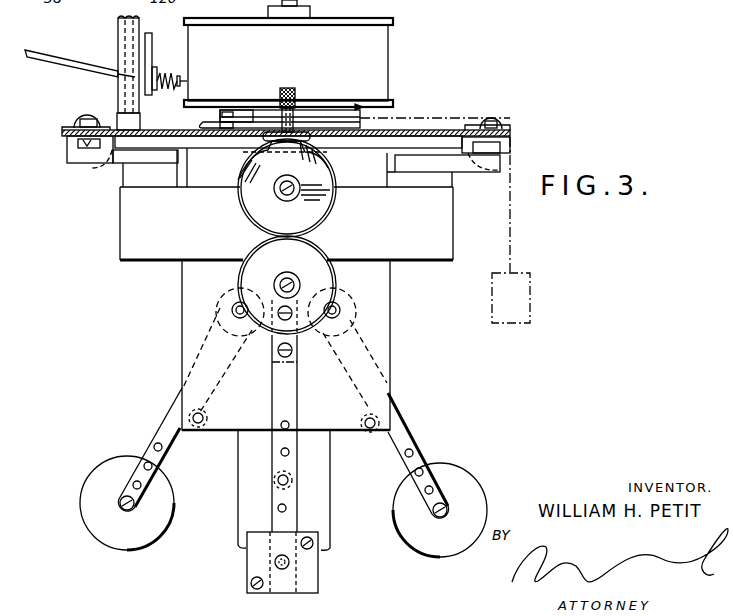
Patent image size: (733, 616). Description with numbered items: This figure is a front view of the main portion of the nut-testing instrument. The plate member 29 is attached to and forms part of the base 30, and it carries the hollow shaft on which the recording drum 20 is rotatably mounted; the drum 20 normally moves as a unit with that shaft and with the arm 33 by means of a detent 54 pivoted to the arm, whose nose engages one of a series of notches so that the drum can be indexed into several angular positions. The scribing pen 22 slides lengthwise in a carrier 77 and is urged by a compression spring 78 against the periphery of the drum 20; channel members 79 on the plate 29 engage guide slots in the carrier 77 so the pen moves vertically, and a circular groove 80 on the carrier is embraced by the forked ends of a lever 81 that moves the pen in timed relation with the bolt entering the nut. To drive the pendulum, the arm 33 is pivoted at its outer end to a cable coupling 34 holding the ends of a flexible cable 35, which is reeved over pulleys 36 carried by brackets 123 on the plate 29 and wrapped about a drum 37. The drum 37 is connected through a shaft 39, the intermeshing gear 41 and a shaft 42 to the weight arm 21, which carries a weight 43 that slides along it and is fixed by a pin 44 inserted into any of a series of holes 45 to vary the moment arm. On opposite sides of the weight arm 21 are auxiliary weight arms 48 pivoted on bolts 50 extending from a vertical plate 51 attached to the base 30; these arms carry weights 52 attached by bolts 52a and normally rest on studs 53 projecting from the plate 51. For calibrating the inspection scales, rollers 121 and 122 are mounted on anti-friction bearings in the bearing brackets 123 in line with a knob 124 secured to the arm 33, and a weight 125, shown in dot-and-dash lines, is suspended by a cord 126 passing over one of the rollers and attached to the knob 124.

The recording drum 20 is at (397, 69).
The weight arm 21 is at (308, 486).
The scribing pen 22 is at (68, 46).
The plate member 29 is at (428, 143).
The base 30 is at (478, 221).
The arm 33 is at (217, 124).
The cable coupling 34 is at (262, 138).
The flexible cable 35 is at (169, 118).
The pulleys 36 is at (63, 126).
The drum 37 is at (238, 170).
The shaft 39 is at (292, 195).
The gear 41 is at (334, 284).
The shaft 42 is at (273, 286).
The weight 43 is at (240, 210).
The pin 44 is at (290, 564).
The holes 45 is at (284, 450).
The auxiliary weight arms 48 is at (164, 414).
The bolts 50 is at (233, 313).
The vertical plate 51 is at (388, 356).
The weights 52 is at (468, 458).
The bolts 52a is at (448, 505).
The studs 53 is at (195, 427).
The detent 54 is at (252, 113).
The pen carrier 77 is at (118, 51).
The compression spring 78 is at (161, 76).
The channel members 79 is at (118, 96).
The circular groove 80 is at (153, 64).
The lever 81 is at (148, 37).
The roller 121 is at (70, 157).
The roller 122 is at (500, 152).
The bearing brackets 123 is at (104, 165).
The knob 124 is at (293, 94).
The weight 125 is at (531, 306).
The cord 126 is at (512, 250).